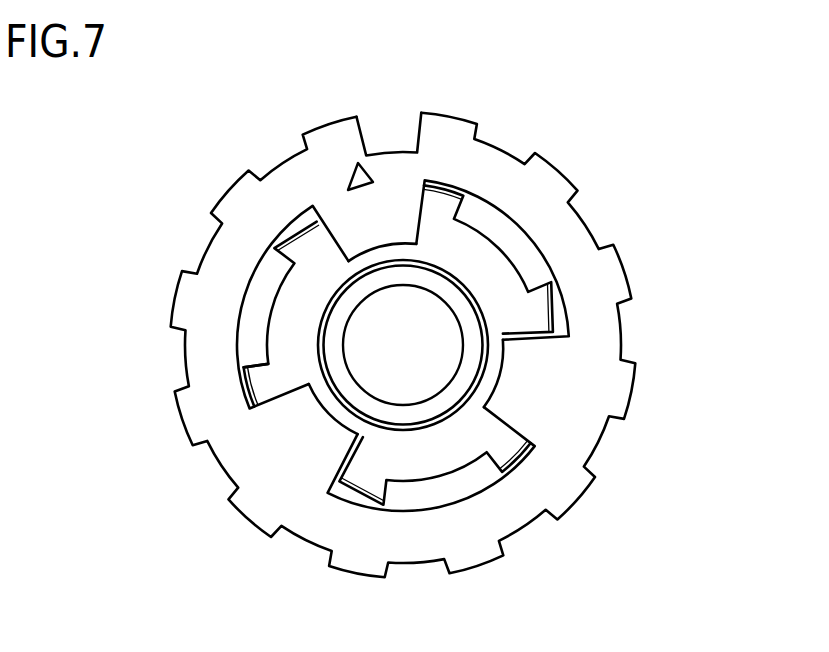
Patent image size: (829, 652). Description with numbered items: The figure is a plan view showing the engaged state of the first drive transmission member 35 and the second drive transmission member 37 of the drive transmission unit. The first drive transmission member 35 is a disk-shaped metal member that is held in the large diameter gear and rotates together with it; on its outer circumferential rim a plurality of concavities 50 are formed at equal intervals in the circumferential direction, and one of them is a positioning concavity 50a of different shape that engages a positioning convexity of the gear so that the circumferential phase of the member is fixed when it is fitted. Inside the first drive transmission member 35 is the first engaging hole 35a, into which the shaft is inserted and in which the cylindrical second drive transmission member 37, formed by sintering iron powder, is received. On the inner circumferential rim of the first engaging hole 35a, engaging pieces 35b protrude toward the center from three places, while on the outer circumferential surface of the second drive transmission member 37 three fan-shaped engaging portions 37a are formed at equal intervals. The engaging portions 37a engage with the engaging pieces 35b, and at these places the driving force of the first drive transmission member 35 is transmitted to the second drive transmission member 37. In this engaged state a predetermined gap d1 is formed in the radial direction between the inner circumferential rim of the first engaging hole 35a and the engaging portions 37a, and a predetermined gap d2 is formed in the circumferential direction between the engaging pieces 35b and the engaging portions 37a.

The first drive transmission member 35 is at (426, 377).
The first engaging hole 35a is at (260, 293).
The engaging pieces 35b is at (305, 430).
The second drive transmission member 37 is at (465, 376).
The engaging portions 37a is at (267, 367).
The concavities 50 is at (640, 330).
The positioning concavity 50a is at (385, 147).
The gap d1 is at (472, 272).
The gap d2 is at (305, 268).